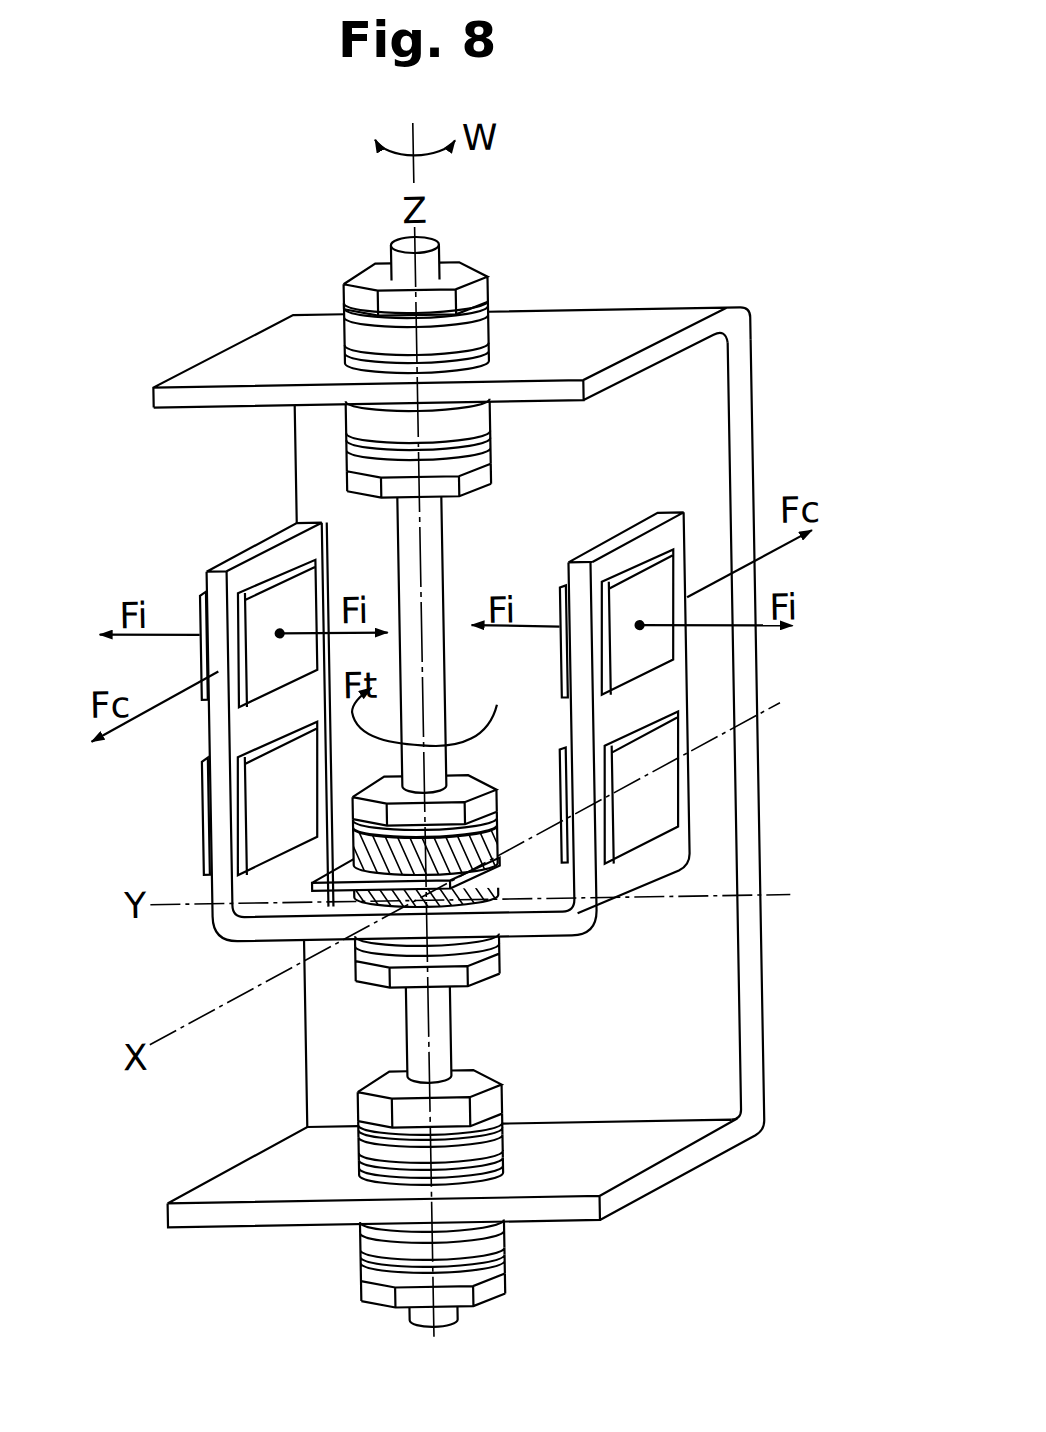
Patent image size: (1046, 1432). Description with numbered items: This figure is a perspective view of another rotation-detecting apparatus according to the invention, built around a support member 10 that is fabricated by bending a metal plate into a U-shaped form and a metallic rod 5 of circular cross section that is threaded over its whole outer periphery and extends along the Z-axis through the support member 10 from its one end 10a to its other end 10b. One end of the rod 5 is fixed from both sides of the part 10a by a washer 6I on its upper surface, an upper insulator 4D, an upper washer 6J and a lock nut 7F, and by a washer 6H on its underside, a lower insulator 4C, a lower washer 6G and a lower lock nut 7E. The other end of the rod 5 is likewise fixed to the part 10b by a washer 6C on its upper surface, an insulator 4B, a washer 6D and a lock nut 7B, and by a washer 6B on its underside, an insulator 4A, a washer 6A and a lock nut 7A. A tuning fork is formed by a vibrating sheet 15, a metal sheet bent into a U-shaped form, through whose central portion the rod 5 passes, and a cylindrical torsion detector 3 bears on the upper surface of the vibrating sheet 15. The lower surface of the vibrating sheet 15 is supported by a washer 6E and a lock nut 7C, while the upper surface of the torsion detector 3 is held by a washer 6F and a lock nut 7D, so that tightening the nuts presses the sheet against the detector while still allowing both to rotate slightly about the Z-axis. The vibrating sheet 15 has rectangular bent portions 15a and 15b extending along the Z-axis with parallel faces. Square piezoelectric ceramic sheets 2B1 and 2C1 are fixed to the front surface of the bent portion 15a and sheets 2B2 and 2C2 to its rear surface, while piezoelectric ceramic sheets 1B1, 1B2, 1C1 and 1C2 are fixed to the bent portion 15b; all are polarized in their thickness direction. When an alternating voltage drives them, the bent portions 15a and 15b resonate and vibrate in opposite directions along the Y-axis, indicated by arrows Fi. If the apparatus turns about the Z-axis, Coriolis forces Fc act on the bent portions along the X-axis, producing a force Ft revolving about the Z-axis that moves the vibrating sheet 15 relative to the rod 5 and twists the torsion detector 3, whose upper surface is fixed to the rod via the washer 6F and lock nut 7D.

The torsion detector 3 is at (492, 842).
The metallic rod 5 is at (395, 265).
The support member 10 is at (741, 394).
The one end of the support member 10a is at (629, 324).
The other end of the support member 10b is at (629, 1164).
The vibrating sheet 15 is at (226, 927).
The bent portion 15a is at (207, 718).
The bent portion 15b is at (682, 688).
The piezoelectric ceramic sheet 1B1 is at (595, 831).
The piezoelectric ceramic sheet 1B2 is at (663, 782).
The piezoelectric ceramic sheet 1C1 is at (559, 588).
The piezoelectric ceramic sheet 1C2 is at (656, 652).
The square piezoelectric ceramic sheet 2B1 is at (260, 817).
The square piezoelectric ceramic sheet 2B2 is at (193, 793).
The square piezoelectric ceramic sheet 2C1 is at (262, 592).
The square piezoelectric ceramic sheet 2C2 is at (197, 596).
The insulator 4A is at (488, 1238).
The insulator 4B is at (342, 1152).
The lower insulator 4C is at (349, 426).
The upper insulator 4D is at (348, 342).
The washer 6A is at (485, 1263).
The washer 6B is at (350, 1239).
The washer 6C is at (342, 1176).
The washer 6D is at (345, 1129).
The washer 6E is at (394, 897).
The washer 6F is at (490, 819).
The lower washer 6G is at (487, 434).
The washer 6H is at (487, 411).
The washer 6I is at (488, 351).
The upper washer 6J is at (349, 311).
The lock nut 7A is at (482, 1285).
The lock nut 7B is at (485, 1091).
The lock nut 7C is at (470, 979).
The lock nut 7D is at (469, 774).
The lower lock nut 7E is at (473, 478).
The lock nut 7F is at (477, 291).